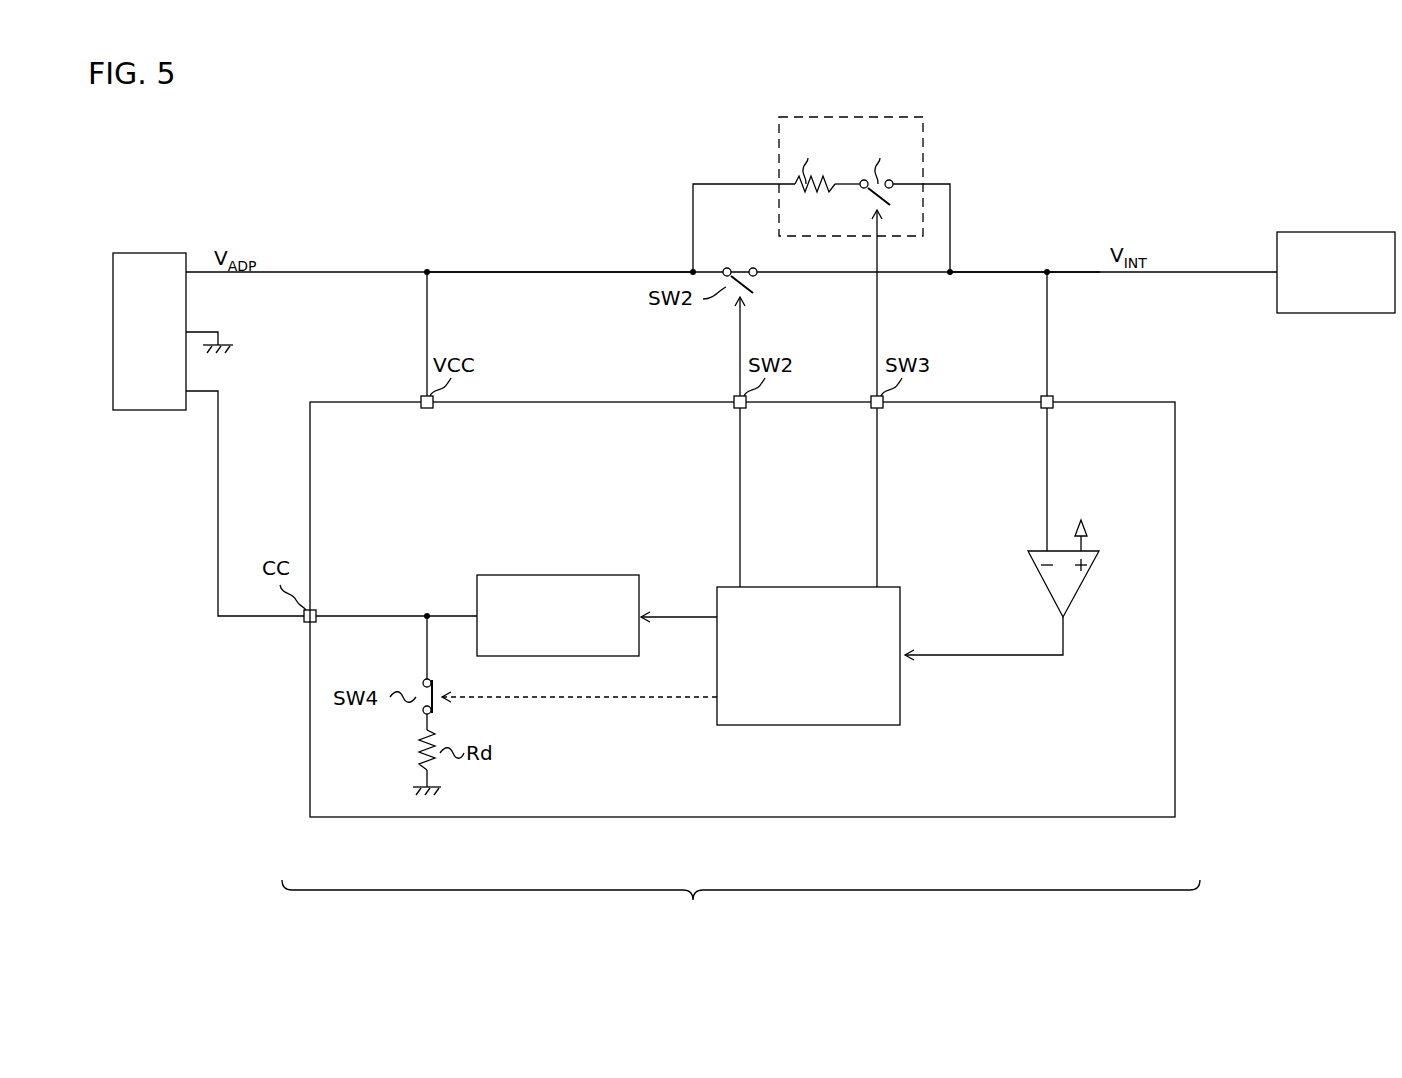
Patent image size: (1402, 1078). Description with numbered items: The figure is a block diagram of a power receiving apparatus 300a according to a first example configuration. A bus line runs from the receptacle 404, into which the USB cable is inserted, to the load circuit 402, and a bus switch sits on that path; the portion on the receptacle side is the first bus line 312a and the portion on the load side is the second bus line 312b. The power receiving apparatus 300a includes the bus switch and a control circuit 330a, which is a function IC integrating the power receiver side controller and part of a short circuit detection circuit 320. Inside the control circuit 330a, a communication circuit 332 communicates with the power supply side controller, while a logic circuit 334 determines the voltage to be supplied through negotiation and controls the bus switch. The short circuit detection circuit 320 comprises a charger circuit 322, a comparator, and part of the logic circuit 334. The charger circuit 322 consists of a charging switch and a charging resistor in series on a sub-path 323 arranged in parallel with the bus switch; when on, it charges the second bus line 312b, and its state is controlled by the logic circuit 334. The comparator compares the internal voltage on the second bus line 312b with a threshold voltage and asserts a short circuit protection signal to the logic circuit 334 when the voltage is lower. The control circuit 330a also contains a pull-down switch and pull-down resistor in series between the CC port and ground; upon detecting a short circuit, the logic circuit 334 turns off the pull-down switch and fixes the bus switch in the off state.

The receptacle 404 is at (132, 253).
The load circuit 402 is at (1325, 232).
The first bus line 312a is at (552, 272).
The second bus line 312b is at (998, 272).
The charger circuit 322 is at (838, 117).
The short circuit detection circuit 320 is at (1112, 603).
The sub-path 323 is at (717, 184).
The communication circuit 332 is at (553, 575).
The logic circuit 334 is at (818, 727).
The control circuit 330a is at (859, 820).
The power receiving apparatus 300a is at (741, 901).